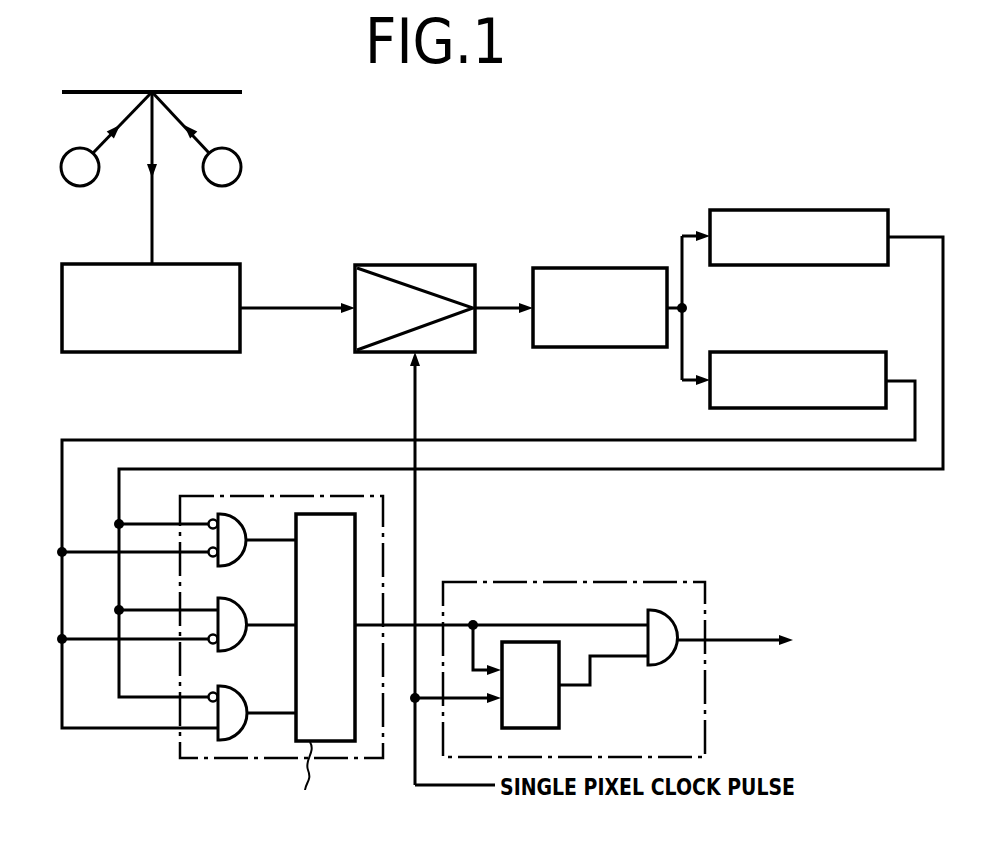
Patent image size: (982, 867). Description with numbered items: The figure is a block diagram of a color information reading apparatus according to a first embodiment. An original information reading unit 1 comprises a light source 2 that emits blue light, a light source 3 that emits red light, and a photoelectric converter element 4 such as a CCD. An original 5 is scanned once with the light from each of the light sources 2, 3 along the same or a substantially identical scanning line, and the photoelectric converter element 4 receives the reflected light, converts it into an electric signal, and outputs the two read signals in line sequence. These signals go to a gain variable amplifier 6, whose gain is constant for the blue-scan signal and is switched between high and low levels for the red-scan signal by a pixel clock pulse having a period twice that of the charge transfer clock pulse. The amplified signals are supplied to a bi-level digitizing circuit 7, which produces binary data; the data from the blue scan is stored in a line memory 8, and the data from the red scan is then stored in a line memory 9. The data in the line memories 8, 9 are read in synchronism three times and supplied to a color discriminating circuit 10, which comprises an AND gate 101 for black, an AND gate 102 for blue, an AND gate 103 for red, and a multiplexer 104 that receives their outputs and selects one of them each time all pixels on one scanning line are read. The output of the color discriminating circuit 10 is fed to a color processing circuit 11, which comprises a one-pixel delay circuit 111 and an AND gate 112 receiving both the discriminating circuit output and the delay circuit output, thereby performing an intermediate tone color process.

The original information reading unit 1 is at (188, 112).
The light source 2 is at (66, 186).
The light source 3 is at (236, 186).
The photoelectric converter element 4 is at (108, 353).
The original 5 is at (192, 91).
The gain variable amplifier 6 is at (432, 265).
The bi-level digitizing circuit 7 is at (603, 268).
The line memory 8 is at (830, 210).
The line memory 9 is at (827, 352).
The color discriminating circuit 10 is at (245, 643).
The color processing circuit 11 is at (618, 631).
The AND gate 101 is at (257, 506).
The AND gate 102 is at (240, 600).
The AND gate 103 is at (240, 688).
The multiplexer 104 is at (327, 518).
The one-pixel delay circuit 111 is at (560, 715).
The AND gate 112 is at (666, 664).